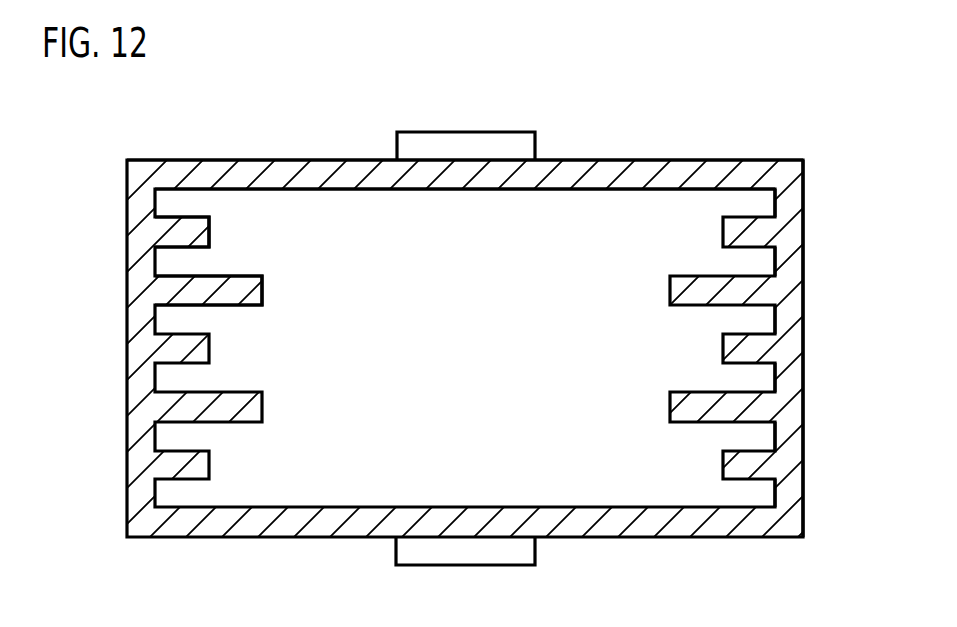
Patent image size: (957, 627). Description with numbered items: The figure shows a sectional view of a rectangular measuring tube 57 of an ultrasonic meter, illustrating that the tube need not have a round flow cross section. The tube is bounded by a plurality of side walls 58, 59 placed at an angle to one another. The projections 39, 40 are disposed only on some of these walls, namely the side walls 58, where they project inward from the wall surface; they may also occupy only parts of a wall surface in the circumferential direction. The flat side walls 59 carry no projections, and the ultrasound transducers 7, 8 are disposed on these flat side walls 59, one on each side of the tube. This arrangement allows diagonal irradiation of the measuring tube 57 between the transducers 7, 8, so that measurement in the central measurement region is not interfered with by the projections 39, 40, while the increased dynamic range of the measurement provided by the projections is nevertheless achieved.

The ultrasound transducer 7 is at (470, 132).
The ultrasound transducer 8 is at (510, 567).
The projection 39 is at (245, 277).
The projection 40 is at (203, 225).
The measuring tube 57 is at (713, 141).
The side wall 58 is at (792, 333).
The side wall 59 is at (602, 178).